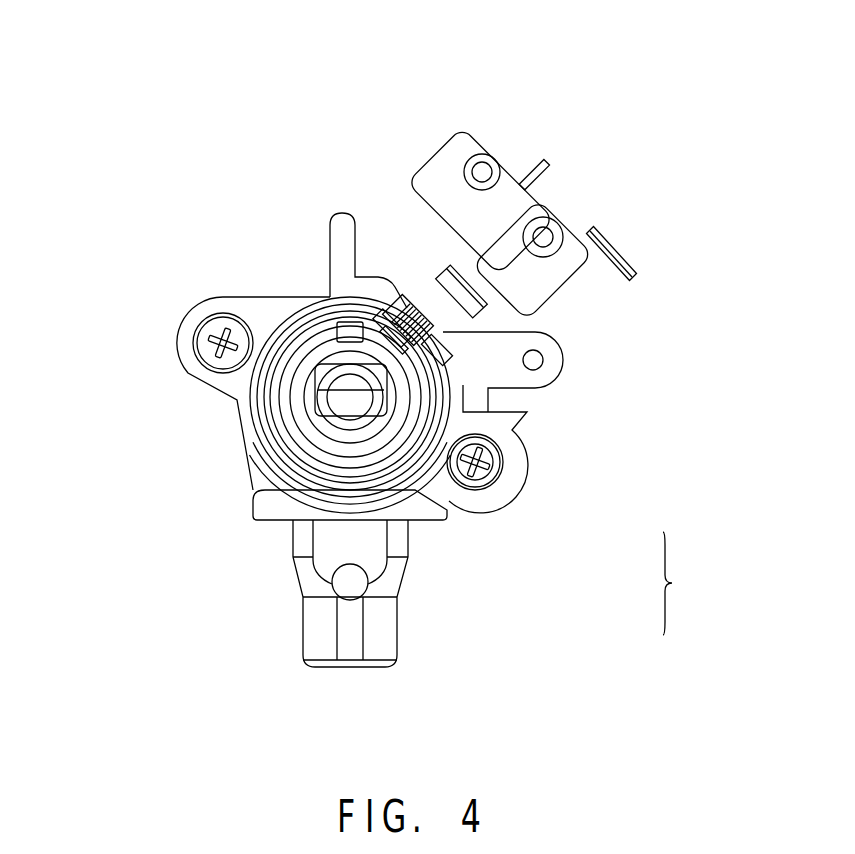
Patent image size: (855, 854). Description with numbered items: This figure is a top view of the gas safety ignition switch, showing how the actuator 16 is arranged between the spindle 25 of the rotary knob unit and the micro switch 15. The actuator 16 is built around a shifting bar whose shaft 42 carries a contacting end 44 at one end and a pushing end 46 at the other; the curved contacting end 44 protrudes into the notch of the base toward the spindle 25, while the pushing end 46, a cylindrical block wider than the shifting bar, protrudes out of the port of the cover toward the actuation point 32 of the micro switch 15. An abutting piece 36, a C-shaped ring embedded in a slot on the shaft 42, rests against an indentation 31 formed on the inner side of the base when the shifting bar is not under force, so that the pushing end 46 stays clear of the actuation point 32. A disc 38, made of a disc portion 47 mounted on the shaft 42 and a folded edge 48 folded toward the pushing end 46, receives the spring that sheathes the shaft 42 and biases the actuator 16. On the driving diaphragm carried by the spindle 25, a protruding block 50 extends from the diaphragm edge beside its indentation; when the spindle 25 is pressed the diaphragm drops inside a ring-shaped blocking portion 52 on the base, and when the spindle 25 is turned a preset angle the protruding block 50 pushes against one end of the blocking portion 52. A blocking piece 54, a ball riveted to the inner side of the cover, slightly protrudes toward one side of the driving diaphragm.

The micro switch 15 is at (571, 135).
The actuator 16 is at (413, 283).
The spindle 25 is at (333, 400).
The indentation 31 is at (387, 342).
The actuation point 32 is at (475, 277).
The abutting piece 36 is at (390, 343).
The disc 38 is at (686, 583).
The shaft 42 is at (445, 308).
The contacting end 44 is at (400, 353).
The pushing end 46 is at (477, 307).
The disc portion 47 is at (425, 350).
The folded edge 48 is at (437, 360).
The protruding block 50 is at (350, 330).
The blocking portion 52 is at (357, 477).
The blocking piece 54 is at (278, 378).